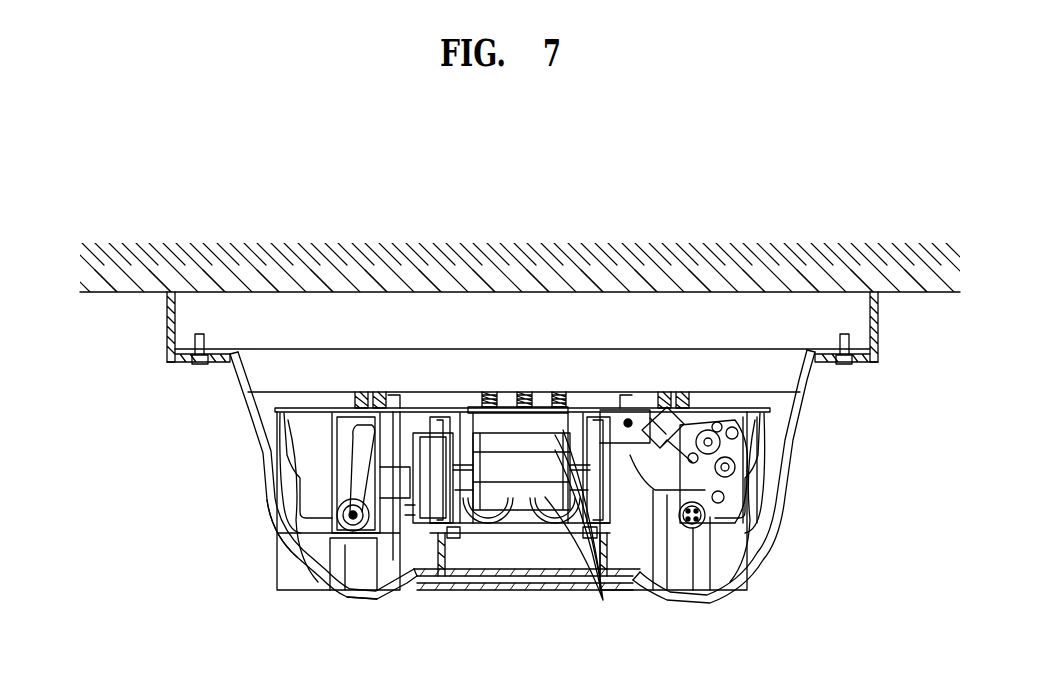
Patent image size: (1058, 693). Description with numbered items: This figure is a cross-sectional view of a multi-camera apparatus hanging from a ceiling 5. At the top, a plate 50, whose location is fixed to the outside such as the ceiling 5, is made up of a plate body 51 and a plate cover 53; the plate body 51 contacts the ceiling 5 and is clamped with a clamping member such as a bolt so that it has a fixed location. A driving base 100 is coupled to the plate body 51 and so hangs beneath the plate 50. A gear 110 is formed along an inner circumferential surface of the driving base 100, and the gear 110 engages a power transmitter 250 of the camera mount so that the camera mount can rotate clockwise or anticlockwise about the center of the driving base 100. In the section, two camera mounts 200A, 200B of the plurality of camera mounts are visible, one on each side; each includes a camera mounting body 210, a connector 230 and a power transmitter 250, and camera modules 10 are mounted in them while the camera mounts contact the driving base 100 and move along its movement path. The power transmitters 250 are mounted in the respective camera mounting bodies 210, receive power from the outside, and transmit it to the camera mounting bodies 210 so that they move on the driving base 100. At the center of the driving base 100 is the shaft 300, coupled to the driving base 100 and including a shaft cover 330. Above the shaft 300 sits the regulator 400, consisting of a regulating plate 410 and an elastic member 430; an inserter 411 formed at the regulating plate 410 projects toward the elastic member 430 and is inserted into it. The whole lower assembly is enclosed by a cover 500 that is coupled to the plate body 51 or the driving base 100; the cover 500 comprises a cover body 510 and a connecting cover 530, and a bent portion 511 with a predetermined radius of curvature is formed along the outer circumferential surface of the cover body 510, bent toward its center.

The ceiling 5 is at (925, 280).
The camera module 10 is at (300, 557).
The plate 50 is at (460, 331).
The plate body 51 is at (196, 312).
The plate cover 53 is at (166, 348).
The driving base 100 is at (253, 375).
The gear 110 is at (361, 392).
The camera mount 200A is at (706, 588).
The camera mount 200B is at (335, 590).
The camera mounting body 210 is at (300, 460).
The connector 230 is at (603, 600).
The power transmitter 250 is at (393, 402).
The shaft 300 is at (513, 543).
The shaft cover 330 is at (513, 518).
The regulator 400 is at (518, 279).
The regulating plate 410 is at (507, 408).
The inserter 411 is at (559, 392).
The elastic member 430 is at (480, 390).
The cover 500 is at (255, 514).
The cover body 510 is at (293, 560).
The bent portion 511 is at (377, 603).
The connecting cover 530 is at (567, 560).